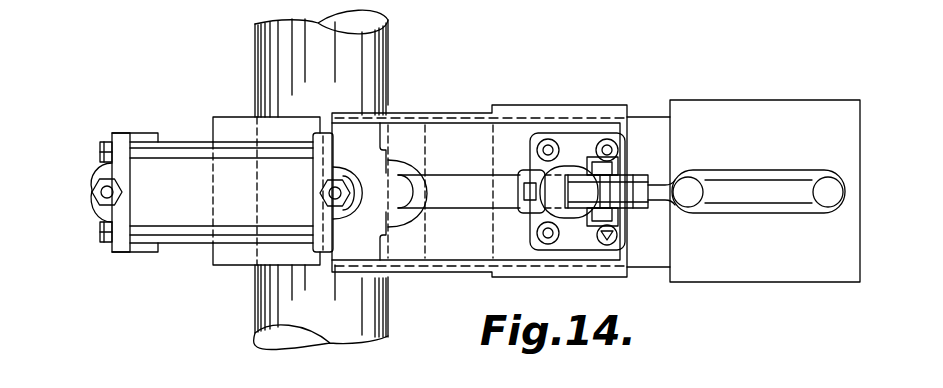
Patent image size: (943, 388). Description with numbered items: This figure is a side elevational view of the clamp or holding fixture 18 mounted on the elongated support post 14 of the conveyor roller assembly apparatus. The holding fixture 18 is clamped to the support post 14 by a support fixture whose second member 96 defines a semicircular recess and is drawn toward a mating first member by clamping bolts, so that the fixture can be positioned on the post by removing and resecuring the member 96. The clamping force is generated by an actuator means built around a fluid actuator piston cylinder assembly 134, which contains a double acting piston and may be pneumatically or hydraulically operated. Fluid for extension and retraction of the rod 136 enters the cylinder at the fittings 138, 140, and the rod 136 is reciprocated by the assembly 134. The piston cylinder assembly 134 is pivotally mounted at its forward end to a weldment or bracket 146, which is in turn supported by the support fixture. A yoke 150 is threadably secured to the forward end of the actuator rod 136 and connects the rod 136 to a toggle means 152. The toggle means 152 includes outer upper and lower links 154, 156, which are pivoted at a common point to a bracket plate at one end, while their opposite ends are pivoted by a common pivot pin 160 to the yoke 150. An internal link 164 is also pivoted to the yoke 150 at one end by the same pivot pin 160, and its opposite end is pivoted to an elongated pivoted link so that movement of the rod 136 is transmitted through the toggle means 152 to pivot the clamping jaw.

The support post 14 is at (378, 59).
The clamp or holding fixture 18 is at (619, 17).
The second member 96 is at (232, 116).
The fluid actuator piston cylinder assembly 134 is at (183, 157).
The rod 136 is at (467, 196).
The fitting 138 is at (100, 201).
The fitting 140 is at (319, 188).
The weldment or bracket 146 is at (447, 113).
The yoke 150 is at (546, 163).
The toggle means 152 is at (628, 137).
The upper link 154 is at (578, 160).
The lower link 156 is at (612, 234).
The pivot pin 160 is at (610, 191).
The internal link 164 is at (626, 180).